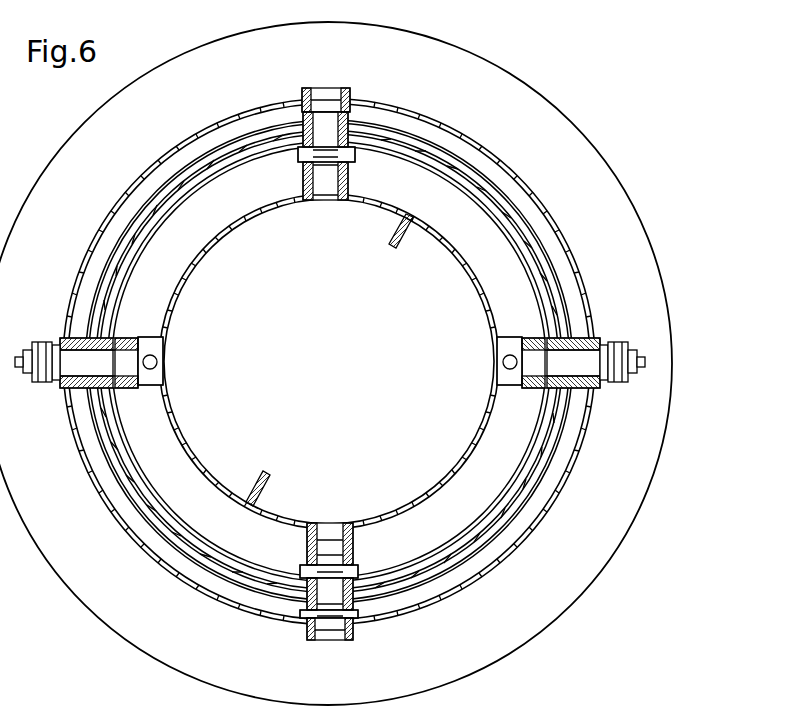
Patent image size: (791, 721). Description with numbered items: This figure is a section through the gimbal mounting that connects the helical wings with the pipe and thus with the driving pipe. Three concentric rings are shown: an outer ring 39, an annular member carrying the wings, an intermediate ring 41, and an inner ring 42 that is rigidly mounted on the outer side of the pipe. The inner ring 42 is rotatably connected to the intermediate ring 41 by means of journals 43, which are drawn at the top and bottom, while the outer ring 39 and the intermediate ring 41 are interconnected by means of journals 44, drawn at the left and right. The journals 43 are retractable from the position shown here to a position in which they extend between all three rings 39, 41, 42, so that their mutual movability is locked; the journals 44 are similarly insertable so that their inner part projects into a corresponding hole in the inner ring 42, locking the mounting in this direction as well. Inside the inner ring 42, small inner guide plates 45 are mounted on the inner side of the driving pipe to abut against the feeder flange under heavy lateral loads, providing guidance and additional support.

The outer ring 39 is at (575, 478).
The intermediate ring 41 is at (520, 492).
The inner ring 42 is at (440, 506).
The journals 43 is at (330, 182).
The journals 44 is at (52, 347).
The inner guide plates 45 is at (262, 480).